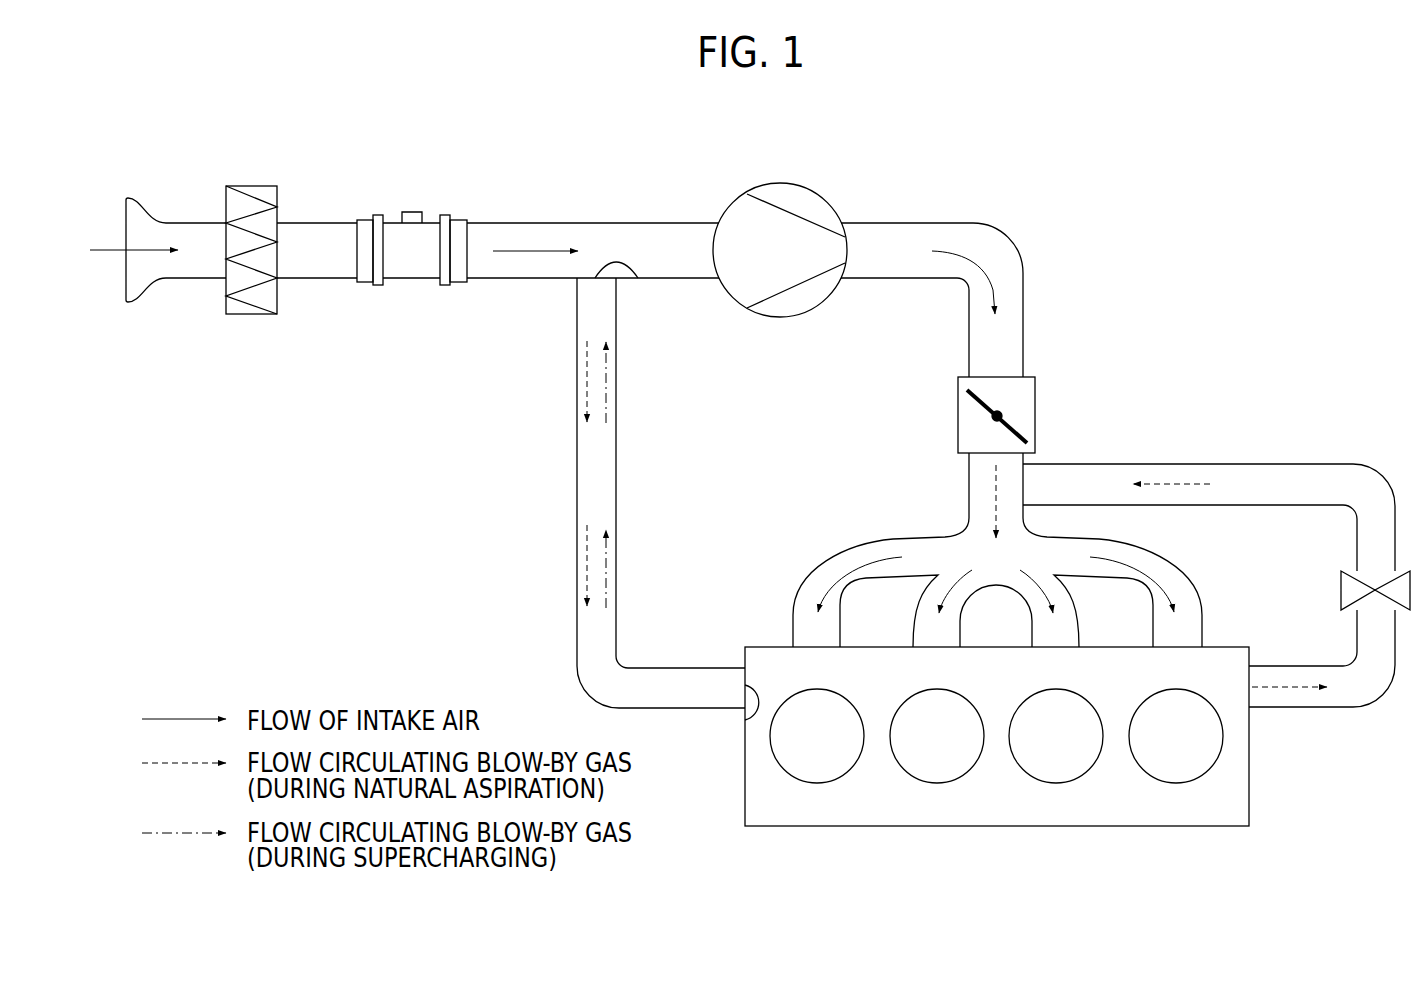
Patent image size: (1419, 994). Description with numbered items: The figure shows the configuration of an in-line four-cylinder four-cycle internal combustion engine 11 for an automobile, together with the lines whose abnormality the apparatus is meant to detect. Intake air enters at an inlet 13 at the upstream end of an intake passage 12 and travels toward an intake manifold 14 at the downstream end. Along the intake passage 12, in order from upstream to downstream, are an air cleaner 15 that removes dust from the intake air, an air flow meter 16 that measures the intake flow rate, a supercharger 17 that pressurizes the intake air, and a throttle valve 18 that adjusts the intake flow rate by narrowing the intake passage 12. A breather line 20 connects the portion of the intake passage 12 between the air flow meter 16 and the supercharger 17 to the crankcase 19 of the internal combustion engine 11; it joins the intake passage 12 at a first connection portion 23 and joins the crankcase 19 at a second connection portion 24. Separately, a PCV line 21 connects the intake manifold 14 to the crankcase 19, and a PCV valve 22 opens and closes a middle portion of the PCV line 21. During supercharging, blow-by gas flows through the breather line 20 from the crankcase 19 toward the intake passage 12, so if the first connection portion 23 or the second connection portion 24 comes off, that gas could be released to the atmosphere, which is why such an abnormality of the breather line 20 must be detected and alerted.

The internal combustion engine 11 is at (963, 781).
The intake passage 12 is at (612, 214).
The inlet 13 is at (125, 211).
The intake manifold 14 is at (893, 538).
The air cleaner 15 is at (257, 186).
The air flow meter 16 is at (456, 219).
The supercharger 17 is at (780, 183).
The throttle valve 18 is at (1037, 405).
The crankcase 19 is at (867, 828).
The breather line 20 is at (577, 506).
The PCV line 21 is at (1238, 463).
The PCV valve 22 is at (1340, 590).
The first connection portion 23 is at (621, 264).
The second connection portion 24 is at (745, 721).